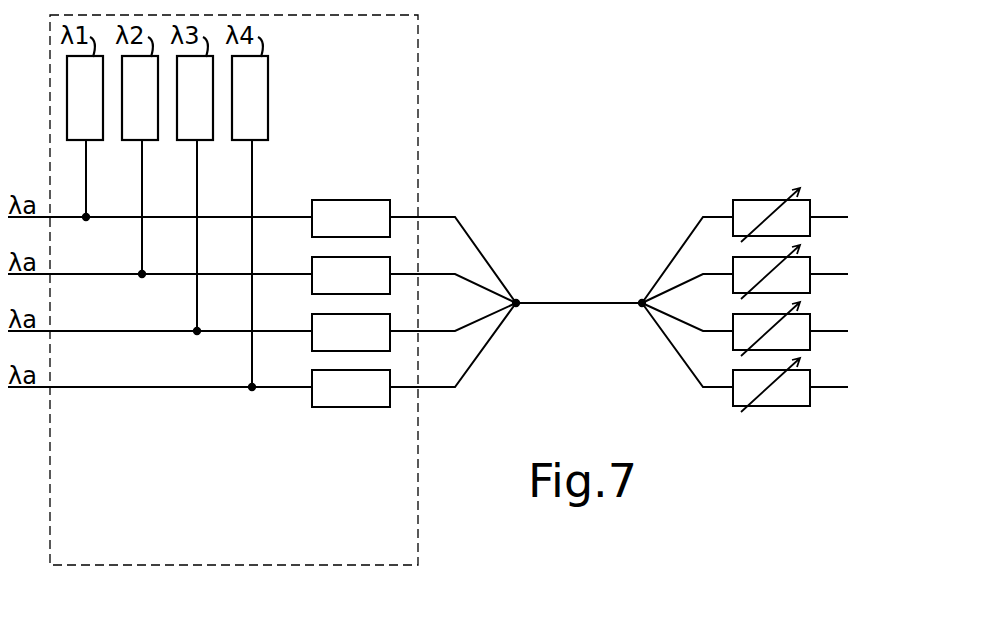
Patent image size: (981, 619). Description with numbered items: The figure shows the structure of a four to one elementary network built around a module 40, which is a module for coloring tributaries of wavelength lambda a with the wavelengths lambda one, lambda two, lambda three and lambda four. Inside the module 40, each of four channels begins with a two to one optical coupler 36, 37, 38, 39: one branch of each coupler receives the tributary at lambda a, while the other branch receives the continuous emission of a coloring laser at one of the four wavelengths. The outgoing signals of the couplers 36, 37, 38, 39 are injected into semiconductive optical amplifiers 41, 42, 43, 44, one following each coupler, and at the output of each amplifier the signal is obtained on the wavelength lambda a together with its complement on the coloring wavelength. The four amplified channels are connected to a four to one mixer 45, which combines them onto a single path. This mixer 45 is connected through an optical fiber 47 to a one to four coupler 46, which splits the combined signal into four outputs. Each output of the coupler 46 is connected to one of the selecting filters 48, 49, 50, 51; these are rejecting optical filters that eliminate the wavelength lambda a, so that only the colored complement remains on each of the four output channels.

The coupler 36 is at (88, 219).
The coupler 37 is at (144, 276).
The coupler 38 is at (199, 333).
The coupler 39 is at (255, 390).
The module 40 is at (418, 71).
The amplifier 41 is at (362, 200).
The amplifier 42 is at (320, 257).
The amplifier 43 is at (320, 315).
The amplifier 44 is at (360, 407).
The 4 to 1 mixer 45 is at (516, 303).
The 1 to 4 coupler 46 is at (642, 303).
The optical fiber 47 is at (590, 308).
The selecting filter 48 is at (733, 205).
The selecting filter 49 is at (737, 263).
The selecting filter 50 is at (733, 318).
The selecting filter 51 is at (733, 393).